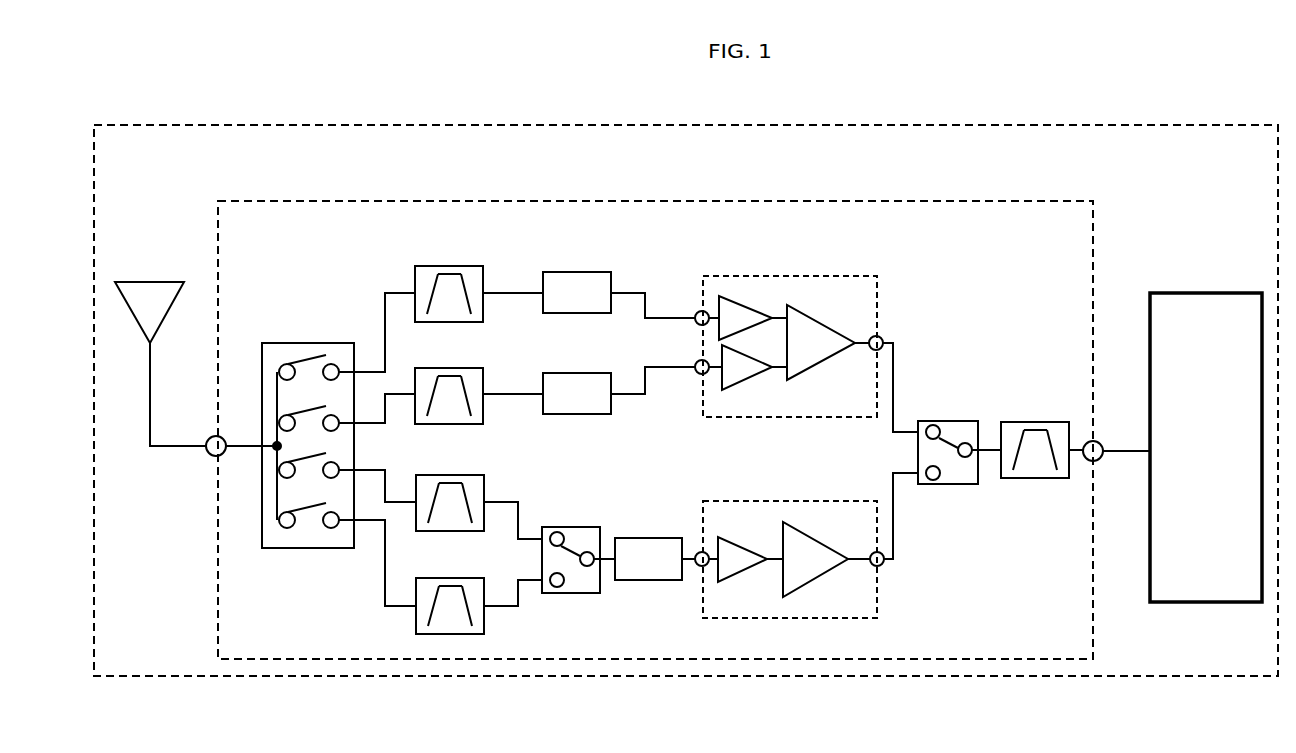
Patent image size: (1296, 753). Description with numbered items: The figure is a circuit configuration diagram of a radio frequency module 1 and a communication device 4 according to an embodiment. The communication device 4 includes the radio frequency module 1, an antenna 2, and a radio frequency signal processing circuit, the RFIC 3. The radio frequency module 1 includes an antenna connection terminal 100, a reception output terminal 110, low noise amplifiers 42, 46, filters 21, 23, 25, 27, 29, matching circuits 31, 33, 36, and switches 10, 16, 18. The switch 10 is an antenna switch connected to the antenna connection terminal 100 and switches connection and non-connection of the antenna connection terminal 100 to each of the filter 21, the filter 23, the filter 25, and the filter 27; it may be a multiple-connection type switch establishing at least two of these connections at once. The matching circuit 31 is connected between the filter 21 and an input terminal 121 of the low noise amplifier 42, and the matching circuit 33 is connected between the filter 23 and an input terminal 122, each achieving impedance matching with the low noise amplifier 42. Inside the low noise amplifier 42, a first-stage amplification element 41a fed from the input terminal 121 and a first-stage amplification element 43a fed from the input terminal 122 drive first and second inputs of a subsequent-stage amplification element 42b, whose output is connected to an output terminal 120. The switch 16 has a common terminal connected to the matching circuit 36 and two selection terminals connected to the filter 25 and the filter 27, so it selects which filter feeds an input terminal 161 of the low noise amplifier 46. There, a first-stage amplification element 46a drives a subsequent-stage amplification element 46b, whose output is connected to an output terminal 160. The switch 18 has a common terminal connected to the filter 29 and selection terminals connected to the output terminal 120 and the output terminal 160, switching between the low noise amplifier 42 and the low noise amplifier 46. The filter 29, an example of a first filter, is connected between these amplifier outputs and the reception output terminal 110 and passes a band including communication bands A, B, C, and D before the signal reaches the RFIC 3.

The radio frequency module 1 is at (983, 201).
The antenna 2 is at (155, 282).
The radio frequency signal processing circuit (RFIC) 3 is at (1185, 293).
The communication device 4 is at (1197, 125).
The switch 10 is at (302, 343).
The switch 16 is at (567, 528).
The switch 18 is at (936, 426).
The filter 21 is at (455, 267).
The filter 23 is at (455, 369).
The filter 25 is at (447, 476).
The filter 27 is at (447, 579).
The filter 29 is at (1025, 422).
The matching circuit 31 is at (572, 272).
The matching circuit 33 is at (572, 374).
The matching circuit 36 is at (643, 539).
The first-stage amplification element 41a is at (745, 301).
The low noise amplifier 42 is at (802, 276).
The subsequent-stage amplification element 42b is at (848, 311).
The first-stage amplification element 43a is at (747, 382).
The low noise amplifier 46 is at (787, 501).
The first-stage amplification element 46a is at (755, 530).
The subsequent-stage amplification element 46b is at (845, 528).
The antenna connection terminal 100 is at (213, 456).
The reception output terminal 110 is at (1099, 459).
The output terminal 120 is at (883, 333).
The input terminal 121 is at (698, 311).
The input terminal 122 is at (698, 374).
The output terminal 160 is at (882, 567).
The input terminal 161 is at (699, 566).